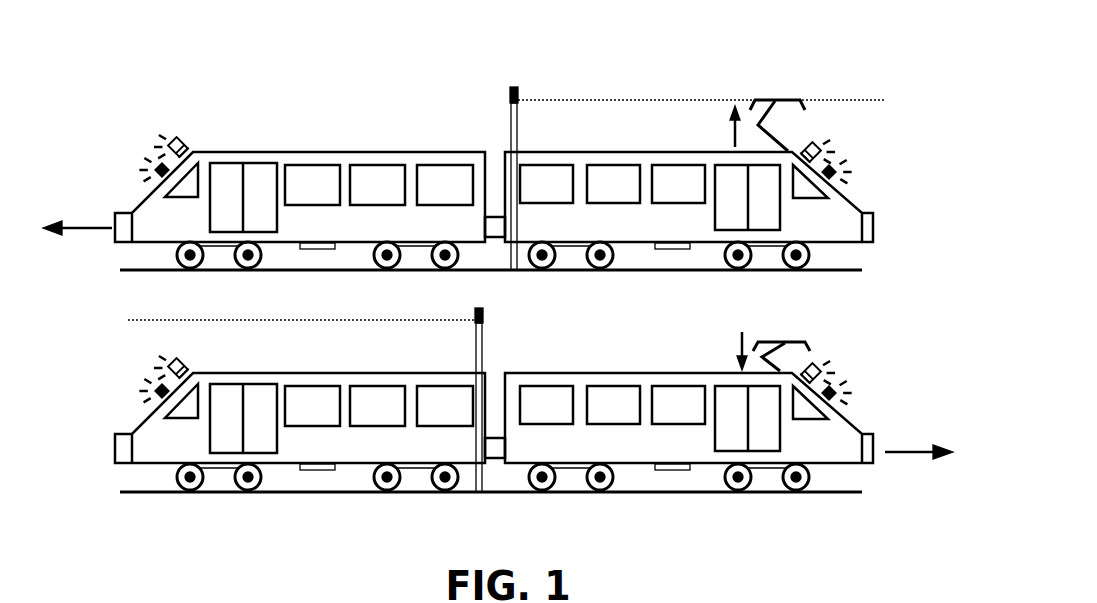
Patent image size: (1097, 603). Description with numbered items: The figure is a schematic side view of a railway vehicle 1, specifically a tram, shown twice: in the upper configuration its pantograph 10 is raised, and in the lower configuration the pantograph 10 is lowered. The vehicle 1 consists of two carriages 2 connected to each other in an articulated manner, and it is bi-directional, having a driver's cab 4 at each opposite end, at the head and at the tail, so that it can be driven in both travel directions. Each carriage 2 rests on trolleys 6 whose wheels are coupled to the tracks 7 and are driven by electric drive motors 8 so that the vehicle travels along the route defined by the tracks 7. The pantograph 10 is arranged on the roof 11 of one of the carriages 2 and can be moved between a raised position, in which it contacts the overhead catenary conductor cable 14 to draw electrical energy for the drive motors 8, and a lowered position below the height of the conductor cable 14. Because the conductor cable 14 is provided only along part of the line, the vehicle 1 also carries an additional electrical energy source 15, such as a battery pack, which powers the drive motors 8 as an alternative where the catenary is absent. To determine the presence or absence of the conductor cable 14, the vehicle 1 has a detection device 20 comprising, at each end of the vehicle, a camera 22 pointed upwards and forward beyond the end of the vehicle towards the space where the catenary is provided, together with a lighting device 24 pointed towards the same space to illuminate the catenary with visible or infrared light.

The railway vehicle 1 is at (908, 70).
The carriage 2 is at (345, 158).
The driver's cab 4 is at (178, 200).
The trolley 6 is at (225, 250).
The tracks 7 is at (120, 268).
The electric drive motor 8 is at (738, 492).
The pantograph 10 is at (778, 112).
The roof 11 is at (620, 152).
The conductor cable 14 is at (570, 98).
The additional electrical energy source 15 is at (318, 250).
The detection device 20 is at (196, 137).
The camera 22 is at (182, 133).
The lighting device 24 is at (153, 172).